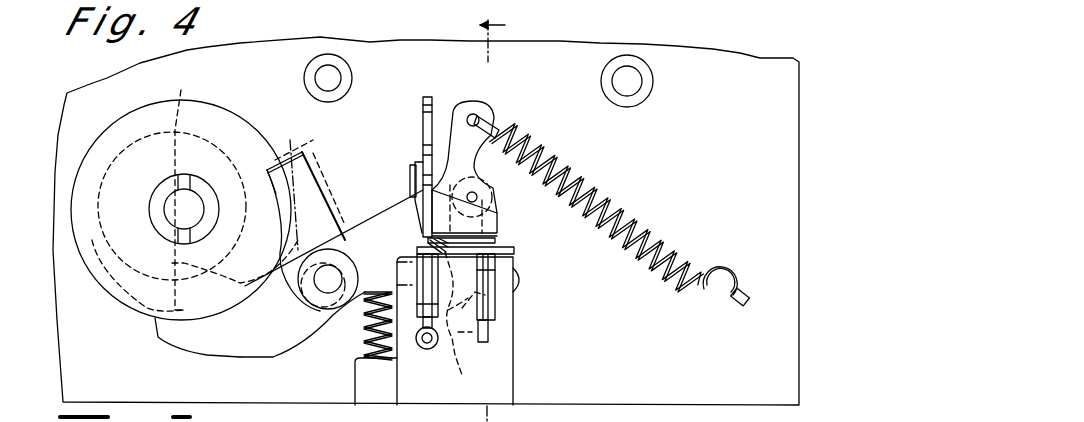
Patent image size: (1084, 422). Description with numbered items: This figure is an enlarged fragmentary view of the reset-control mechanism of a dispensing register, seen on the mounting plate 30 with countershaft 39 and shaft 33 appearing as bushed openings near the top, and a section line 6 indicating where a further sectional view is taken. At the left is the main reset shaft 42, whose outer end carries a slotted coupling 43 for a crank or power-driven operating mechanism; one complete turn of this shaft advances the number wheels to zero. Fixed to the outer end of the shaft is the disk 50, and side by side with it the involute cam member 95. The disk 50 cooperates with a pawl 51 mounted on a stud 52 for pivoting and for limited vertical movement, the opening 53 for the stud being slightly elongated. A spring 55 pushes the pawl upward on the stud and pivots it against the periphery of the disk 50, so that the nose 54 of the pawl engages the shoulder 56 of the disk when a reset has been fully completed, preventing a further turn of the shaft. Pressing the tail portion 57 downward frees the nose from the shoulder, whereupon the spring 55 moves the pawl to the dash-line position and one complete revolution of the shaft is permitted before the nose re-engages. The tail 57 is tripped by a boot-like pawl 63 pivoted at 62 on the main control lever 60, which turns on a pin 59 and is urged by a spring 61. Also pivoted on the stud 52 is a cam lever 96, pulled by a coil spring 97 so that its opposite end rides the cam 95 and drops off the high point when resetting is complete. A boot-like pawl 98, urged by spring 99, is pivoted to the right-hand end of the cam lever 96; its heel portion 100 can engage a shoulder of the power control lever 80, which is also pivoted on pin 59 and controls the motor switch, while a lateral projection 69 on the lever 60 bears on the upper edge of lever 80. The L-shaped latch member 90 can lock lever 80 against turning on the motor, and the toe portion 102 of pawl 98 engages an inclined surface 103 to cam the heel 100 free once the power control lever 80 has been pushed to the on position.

The mounting plate 30 is at (729, 51).
The section line 6 is at (501, 218).
The shaft 33 is at (628, 70).
The countershaft 39 is at (329, 66).
The main reset shaft 42 is at (192, 200).
The slotted coupling 43 is at (163, 186).
The disk 50 is at (210, 104).
The pawl 51 is at (329, 194).
The stud 52 is at (331, 265).
The opening 53 is at (305, 307).
The nose 54 is at (305, 152).
The spring 55 is at (360, 350).
The shoulder 56 is at (270, 166).
The tail portion 57 is at (410, 284).
The pin 59 is at (521, 278).
The main control lever 60 is at (428, 96).
The spring 61 is at (425, 349).
The pivot 62 is at (410, 172).
The boot-like pawl 63 is at (417, 162).
The lateral projection 69 is at (490, 228).
The power control lever 80 is at (491, 329).
The L-shaped latch member 90 is at (516, 248).
The involute cam member 95 is at (179, 190).
The cam lever 96 is at (210, 352).
The coil spring 97 is at (628, 204).
The boot-like pawl 98 is at (496, 192).
The spring 99 is at (427, 241).
The heel portion 100 is at (493, 302).
The toe portion 102 is at (461, 313).
The inclined surface 103 is at (461, 344).